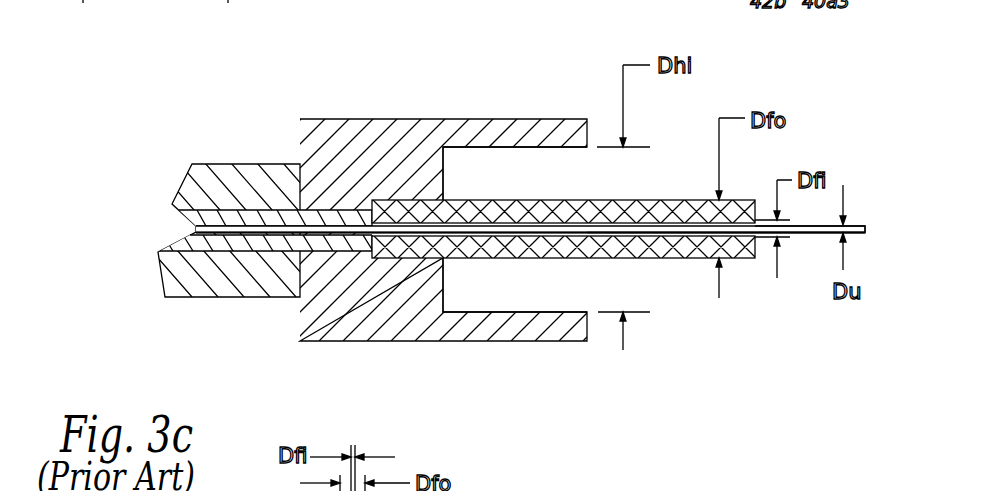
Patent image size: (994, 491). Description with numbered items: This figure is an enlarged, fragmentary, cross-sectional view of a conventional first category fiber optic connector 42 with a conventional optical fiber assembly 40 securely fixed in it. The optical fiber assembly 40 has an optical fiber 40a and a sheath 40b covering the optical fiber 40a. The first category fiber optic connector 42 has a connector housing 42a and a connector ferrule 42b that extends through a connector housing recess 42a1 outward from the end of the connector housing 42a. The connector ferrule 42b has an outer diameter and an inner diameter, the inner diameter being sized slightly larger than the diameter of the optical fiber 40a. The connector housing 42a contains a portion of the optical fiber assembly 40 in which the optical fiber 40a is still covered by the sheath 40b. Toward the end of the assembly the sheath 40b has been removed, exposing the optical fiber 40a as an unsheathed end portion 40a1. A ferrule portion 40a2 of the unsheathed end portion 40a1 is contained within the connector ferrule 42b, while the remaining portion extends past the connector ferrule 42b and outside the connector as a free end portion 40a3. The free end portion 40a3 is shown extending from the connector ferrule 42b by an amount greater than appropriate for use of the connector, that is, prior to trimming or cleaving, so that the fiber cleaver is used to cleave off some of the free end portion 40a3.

The optical fiber assembly 40 is at (222, 208).
The optical fiber 40a is at (353, 228).
The unsheathed end portion 40a1 is at (853, 223).
The ferrule portion 40a2 is at (648, 233).
The free end portion 40a3 is at (812, 229).
The sheath 40b is at (255, 217).
The first category fiber optic connector 42 is at (378, 82).
The connector housing 42a is at (337, 147).
The connector housing recess 42a1 is at (540, 160).
The connector ferrule 42b is at (652, 200).